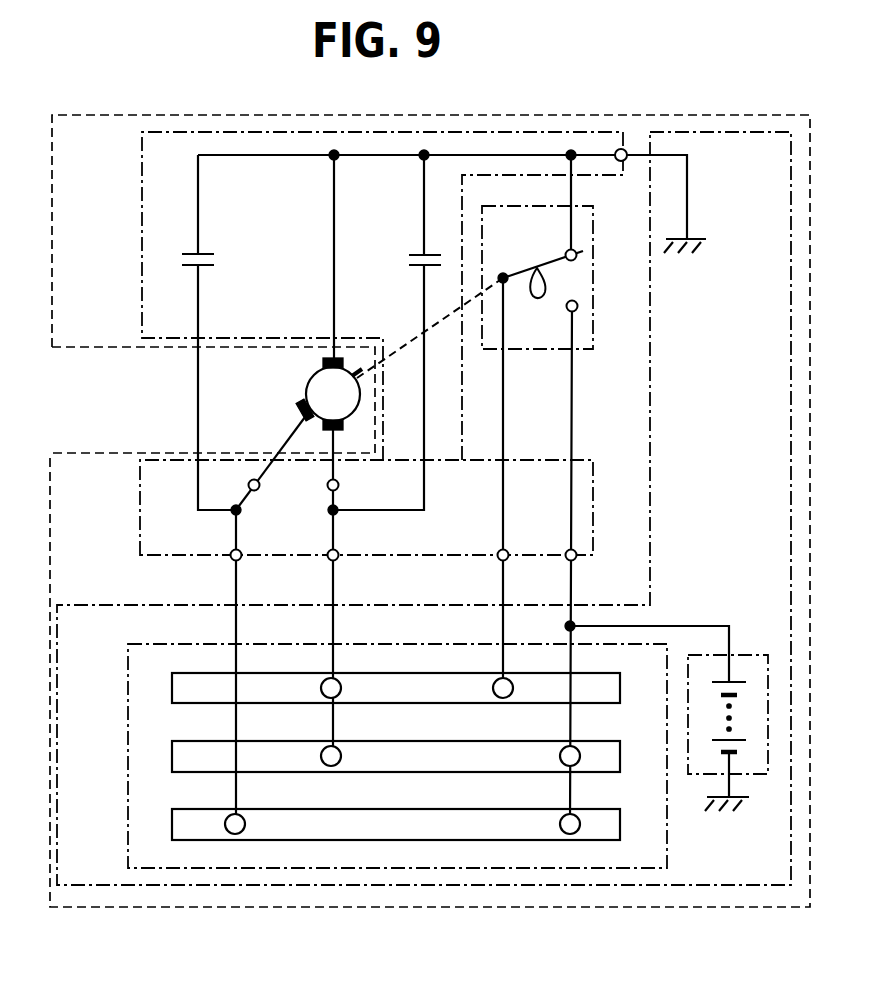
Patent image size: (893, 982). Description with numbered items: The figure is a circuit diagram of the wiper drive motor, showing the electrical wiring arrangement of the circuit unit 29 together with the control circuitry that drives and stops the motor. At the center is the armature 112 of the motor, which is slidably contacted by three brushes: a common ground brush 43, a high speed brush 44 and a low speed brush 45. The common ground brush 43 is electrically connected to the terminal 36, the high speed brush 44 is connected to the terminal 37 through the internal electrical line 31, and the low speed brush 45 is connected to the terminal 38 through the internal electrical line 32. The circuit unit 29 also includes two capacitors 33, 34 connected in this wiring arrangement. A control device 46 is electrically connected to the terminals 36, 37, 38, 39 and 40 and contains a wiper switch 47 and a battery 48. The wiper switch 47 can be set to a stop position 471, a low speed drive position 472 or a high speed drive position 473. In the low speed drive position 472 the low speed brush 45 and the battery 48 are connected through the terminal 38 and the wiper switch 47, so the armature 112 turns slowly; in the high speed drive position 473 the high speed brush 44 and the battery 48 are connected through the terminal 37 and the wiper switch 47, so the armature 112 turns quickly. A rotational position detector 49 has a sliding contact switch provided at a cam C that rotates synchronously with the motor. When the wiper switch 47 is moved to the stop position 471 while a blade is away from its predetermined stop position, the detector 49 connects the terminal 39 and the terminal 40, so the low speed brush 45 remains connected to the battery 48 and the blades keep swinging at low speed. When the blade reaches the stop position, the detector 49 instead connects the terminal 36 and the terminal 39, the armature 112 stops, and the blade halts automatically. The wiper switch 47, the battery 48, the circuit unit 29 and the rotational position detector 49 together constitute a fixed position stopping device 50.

The circuit unit 29 is at (142, 262).
The internal electrical line 31 is at (258, 490).
The internal electrical line 32 is at (338, 485).
The capacitor 33 is at (200, 254).
The capacitor 34 is at (416, 255).
The terminal 36 is at (627, 163).
The terminal 37 is at (233, 558).
The terminal 38 is at (329, 558).
The terminal 39 is at (500, 560).
The terminal 40 is at (575, 560).
The common ground brush 43 is at (323, 362).
The high speed brush 44 is at (298, 408).
The low speed brush 45 is at (345, 428).
The control device 46 is at (100, 604).
The wiper switch 47 is at (419, 759).
The battery 48 is at (764, 654).
The rotational position detector 49 is at (594, 352).
The fixed position stopping device 50 is at (385, 908).
The armature 112 is at (376, 347).
The stop position 471 is at (208, 697).
The low speed drive position 472 is at (205, 765).
The high speed drive position 473 is at (592, 812).
The cam C is at (537, 297).